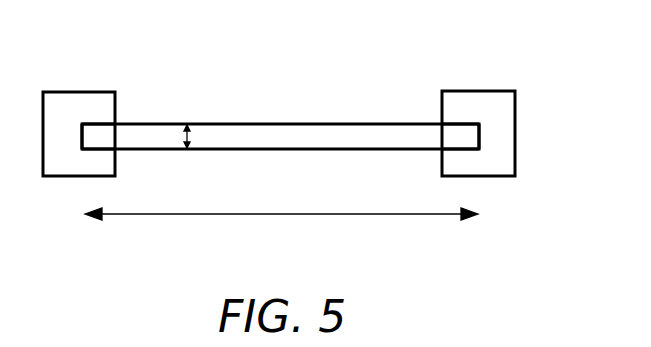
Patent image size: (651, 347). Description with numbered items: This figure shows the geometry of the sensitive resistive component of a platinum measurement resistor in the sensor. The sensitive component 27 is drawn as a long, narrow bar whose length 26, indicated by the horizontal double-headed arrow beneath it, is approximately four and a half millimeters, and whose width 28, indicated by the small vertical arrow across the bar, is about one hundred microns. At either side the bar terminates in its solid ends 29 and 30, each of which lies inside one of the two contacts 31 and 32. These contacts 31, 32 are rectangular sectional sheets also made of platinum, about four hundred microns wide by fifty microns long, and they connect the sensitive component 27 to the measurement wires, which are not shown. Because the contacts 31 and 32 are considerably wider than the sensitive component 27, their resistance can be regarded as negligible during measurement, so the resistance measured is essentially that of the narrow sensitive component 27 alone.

The length 26 is at (313, 214).
The sensitive component 27 is at (318, 135).
The width 28 is at (190, 133).
The solid end 29 is at (104, 140).
The solid end 30 is at (455, 138).
The contact 31 is at (70, 105).
The contact 32 is at (498, 167).